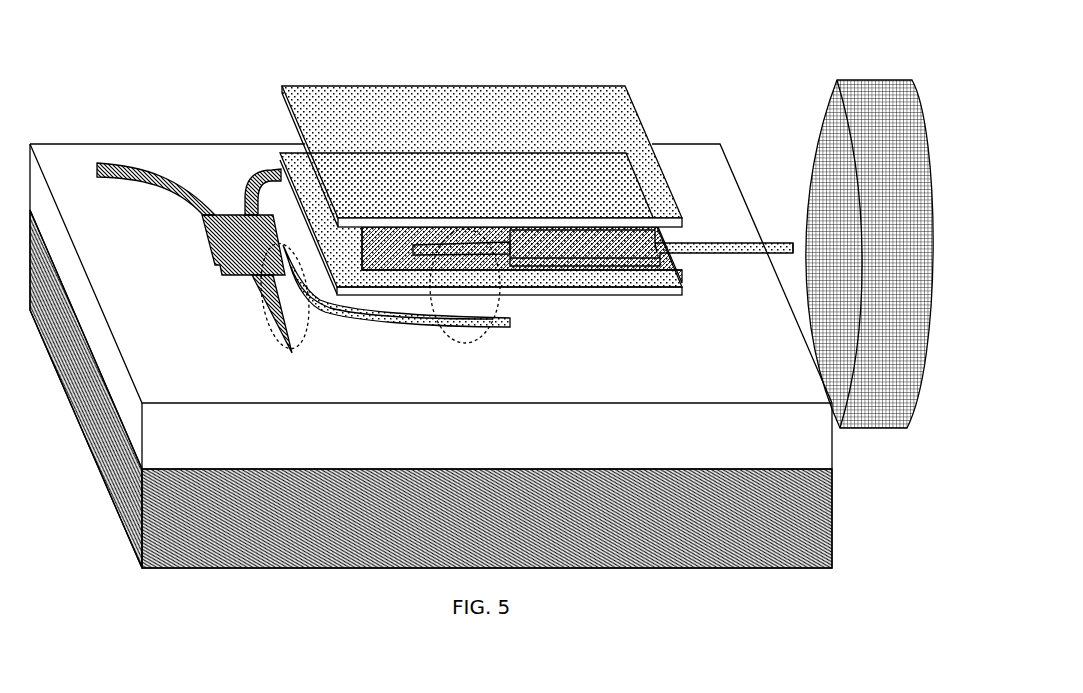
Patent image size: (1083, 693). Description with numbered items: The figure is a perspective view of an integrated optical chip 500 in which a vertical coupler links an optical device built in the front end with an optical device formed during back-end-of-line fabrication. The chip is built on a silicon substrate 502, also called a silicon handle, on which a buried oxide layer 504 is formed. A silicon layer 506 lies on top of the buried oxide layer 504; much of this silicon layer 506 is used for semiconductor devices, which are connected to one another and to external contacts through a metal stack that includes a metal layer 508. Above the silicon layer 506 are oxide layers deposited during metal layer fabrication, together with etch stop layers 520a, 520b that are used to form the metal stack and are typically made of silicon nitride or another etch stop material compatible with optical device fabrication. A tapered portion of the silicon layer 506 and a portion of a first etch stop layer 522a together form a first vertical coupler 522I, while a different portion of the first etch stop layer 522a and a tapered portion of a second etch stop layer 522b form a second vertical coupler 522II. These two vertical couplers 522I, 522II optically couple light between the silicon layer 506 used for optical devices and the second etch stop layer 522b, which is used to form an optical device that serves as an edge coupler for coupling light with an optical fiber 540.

The integrated optical chip 500 is at (97, 53).
The silicon substrate 502 is at (72, 387).
The buried oxide layer 504 is at (78, 152).
The silicon layer 506 is at (153, 167).
The metal layer 508 is at (252, 185).
The etch stop layer 520a is at (283, 157).
The etch stop layer 520b is at (297, 92).
The first etch stop layer 522a is at (350, 317).
The second etch stop layer 522b is at (620, 245).
The first vertical coupler 522I is at (262, 322).
The second vertical coupler 522II is at (497, 300).
The optical fiber 540 is at (820, 143).